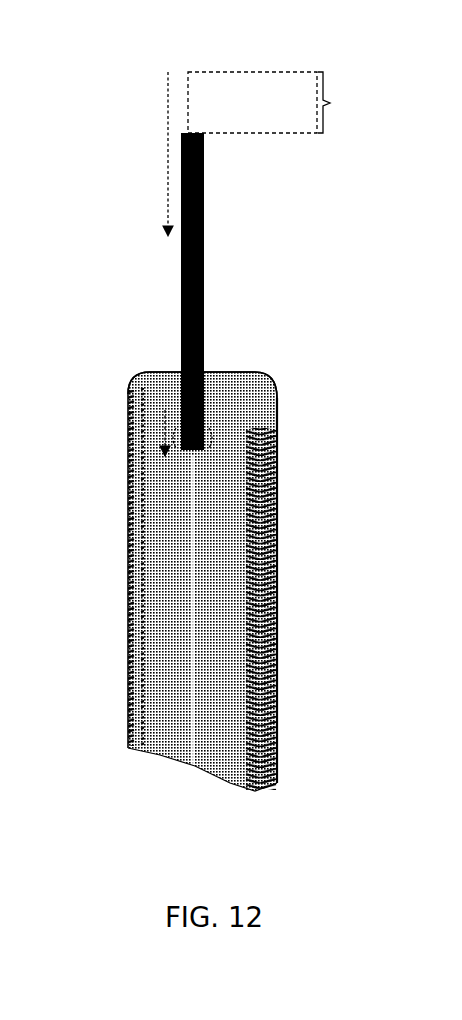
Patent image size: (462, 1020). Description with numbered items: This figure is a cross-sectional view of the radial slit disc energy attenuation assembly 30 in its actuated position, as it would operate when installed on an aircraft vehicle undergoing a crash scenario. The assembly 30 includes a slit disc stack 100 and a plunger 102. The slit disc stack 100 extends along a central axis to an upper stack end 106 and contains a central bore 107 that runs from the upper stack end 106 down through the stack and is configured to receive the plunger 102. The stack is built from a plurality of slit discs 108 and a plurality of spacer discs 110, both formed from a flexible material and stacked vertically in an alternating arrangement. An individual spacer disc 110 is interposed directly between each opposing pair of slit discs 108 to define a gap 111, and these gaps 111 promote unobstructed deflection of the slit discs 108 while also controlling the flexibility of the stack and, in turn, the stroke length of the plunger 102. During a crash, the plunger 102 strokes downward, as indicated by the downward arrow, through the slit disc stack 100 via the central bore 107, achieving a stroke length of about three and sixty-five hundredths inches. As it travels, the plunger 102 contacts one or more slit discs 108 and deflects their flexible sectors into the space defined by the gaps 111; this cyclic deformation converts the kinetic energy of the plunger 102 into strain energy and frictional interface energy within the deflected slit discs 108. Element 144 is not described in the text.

The radial slit disc energy attenuation assembly 30 is at (132, 92).
The slit disc stack 100 is at (127, 545).
The plunger 102 is at (204, 241).
The upper stack end 106 is at (158, 374).
The central bore 107 is at (197, 742).
The slit discs 108 is at (273, 422).
The spacer discs 110 is at (275, 430).
The gap 111 is at (134, 403).
The rod end seat 144 is at (203, 435).